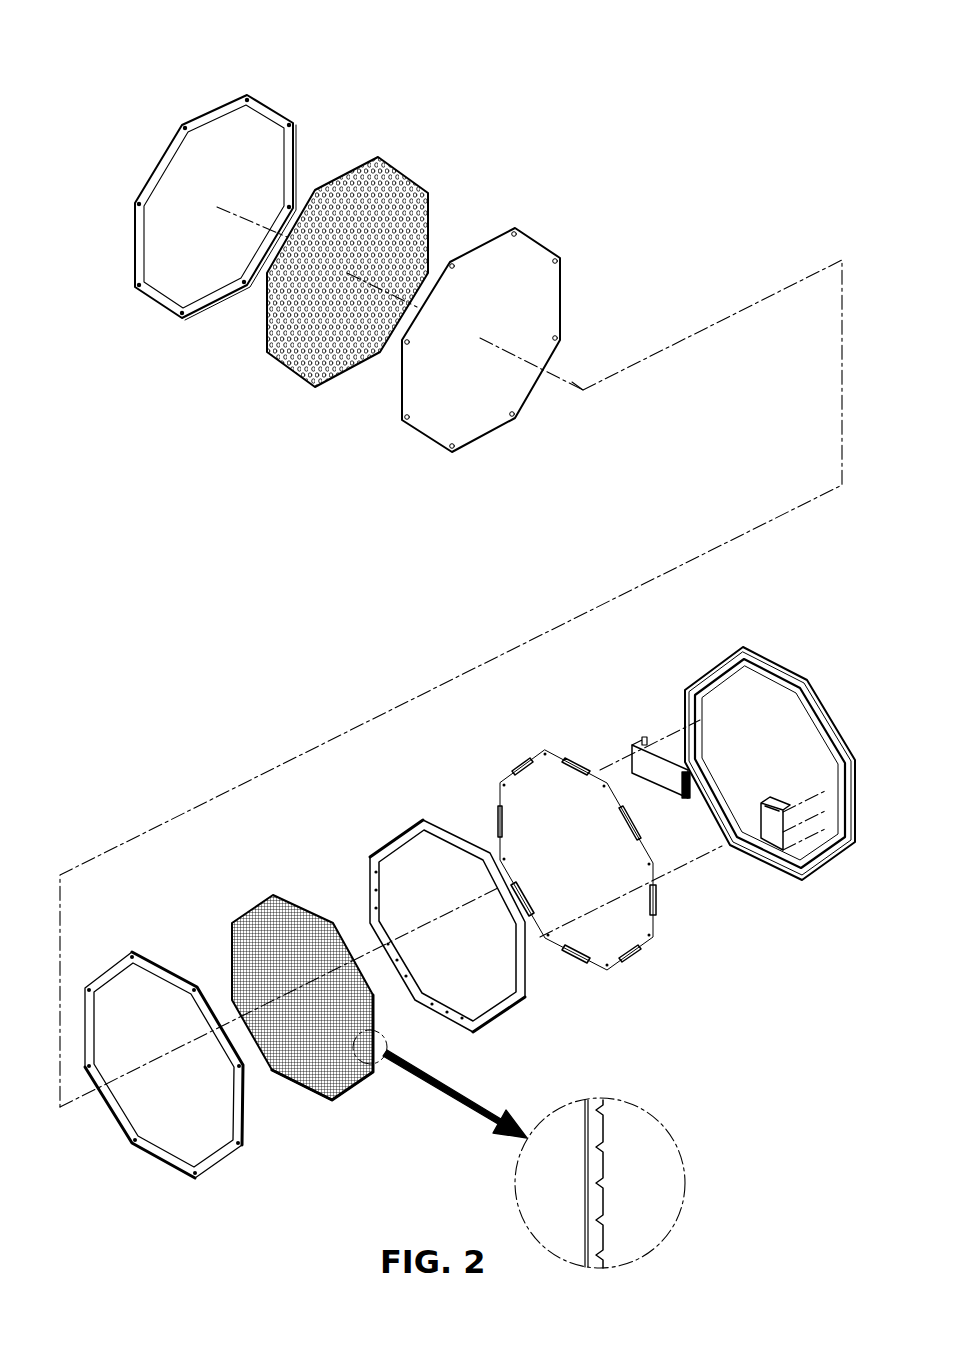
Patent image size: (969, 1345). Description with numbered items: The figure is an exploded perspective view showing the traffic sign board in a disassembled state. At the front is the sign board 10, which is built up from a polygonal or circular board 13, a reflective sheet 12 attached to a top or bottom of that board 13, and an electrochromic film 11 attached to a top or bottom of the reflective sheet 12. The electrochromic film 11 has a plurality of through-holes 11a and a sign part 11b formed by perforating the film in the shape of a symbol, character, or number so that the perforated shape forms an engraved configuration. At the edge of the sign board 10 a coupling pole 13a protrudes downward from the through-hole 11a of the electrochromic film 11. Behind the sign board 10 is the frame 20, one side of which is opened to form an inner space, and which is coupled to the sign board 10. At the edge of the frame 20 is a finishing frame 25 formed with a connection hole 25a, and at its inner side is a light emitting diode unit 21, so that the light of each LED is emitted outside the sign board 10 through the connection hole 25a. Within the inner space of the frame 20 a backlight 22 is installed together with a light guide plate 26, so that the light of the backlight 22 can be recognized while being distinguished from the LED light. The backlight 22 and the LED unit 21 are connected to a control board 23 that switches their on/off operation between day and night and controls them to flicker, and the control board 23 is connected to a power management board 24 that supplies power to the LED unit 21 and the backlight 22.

The sign board 10 is at (223, 13).
The electrochromic film 11 is at (215, 132).
The through-holes 11a is at (140, 212).
The sign part 11b is at (190, 190).
The reflective sheet 12 is at (378, 158).
The polygonal or circular board 13 is at (493, 245).
The coupling pole 13a is at (512, 230).
The frame 20 is at (763, 663).
The light emitting diode (LED) unit 21 is at (607, 970).
The backlight 22 is at (522, 985).
The control board 23 is at (772, 830).
The power management board 24 is at (633, 750).
The finishing frame 25 is at (217, 1157).
The connection hole 25a is at (132, 952).
The light guide plate 26 is at (347, 1087).